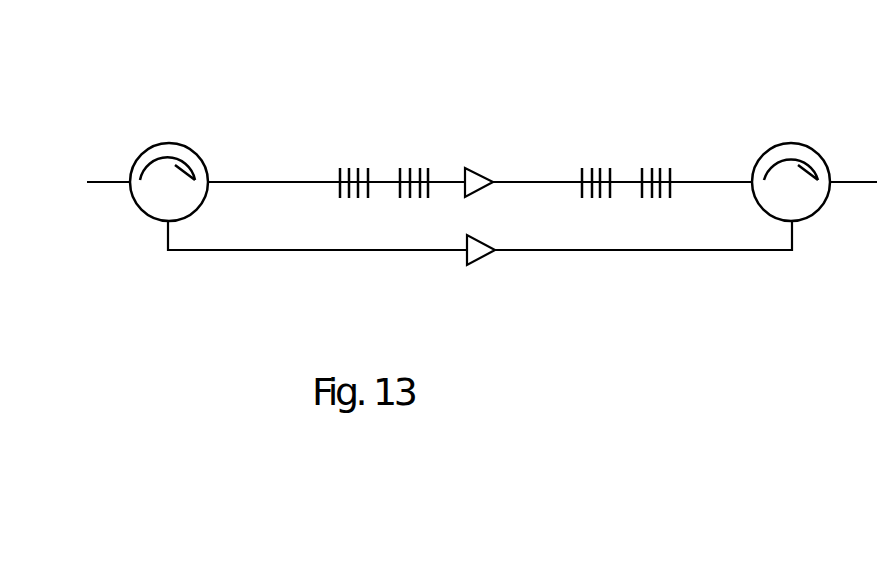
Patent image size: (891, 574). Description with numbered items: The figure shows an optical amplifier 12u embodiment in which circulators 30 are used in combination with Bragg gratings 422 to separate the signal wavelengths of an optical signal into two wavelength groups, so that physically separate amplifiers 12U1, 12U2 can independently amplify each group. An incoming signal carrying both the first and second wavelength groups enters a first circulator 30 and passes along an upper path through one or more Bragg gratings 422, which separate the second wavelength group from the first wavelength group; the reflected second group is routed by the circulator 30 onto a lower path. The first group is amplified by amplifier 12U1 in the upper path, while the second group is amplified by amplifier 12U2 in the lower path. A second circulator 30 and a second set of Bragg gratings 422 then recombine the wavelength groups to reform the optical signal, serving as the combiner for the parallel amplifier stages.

The optical amplifier 12u is at (441, 83).
The circulator 30 is at (135, 160).
The Bragg gratings 422 is at (413, 163).
The optical amplifier 12U1 is at (480, 173).
The optical amplifier 12U2 is at (480, 260).